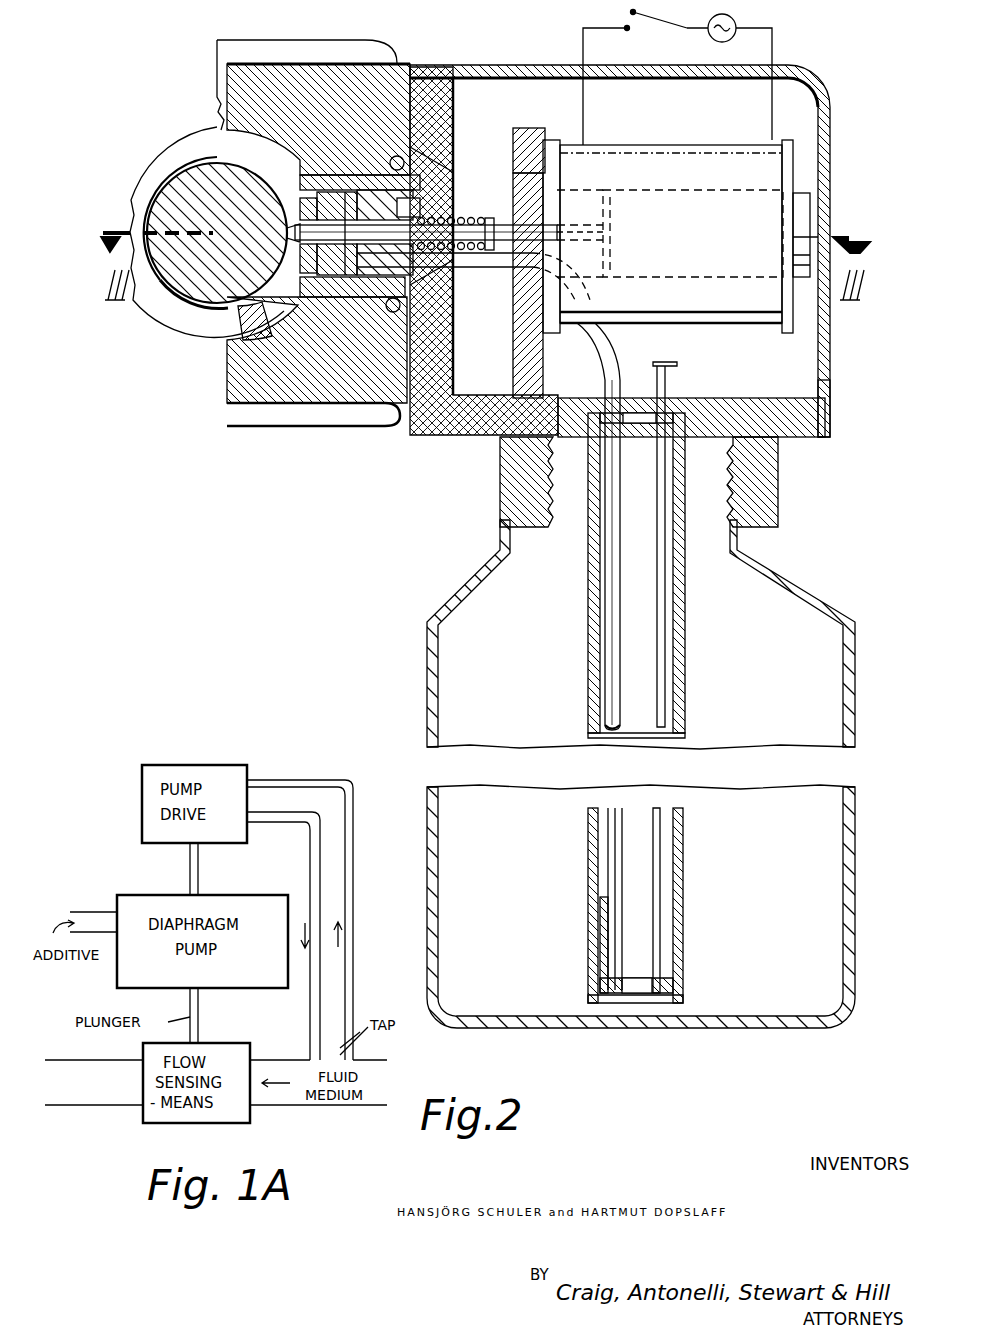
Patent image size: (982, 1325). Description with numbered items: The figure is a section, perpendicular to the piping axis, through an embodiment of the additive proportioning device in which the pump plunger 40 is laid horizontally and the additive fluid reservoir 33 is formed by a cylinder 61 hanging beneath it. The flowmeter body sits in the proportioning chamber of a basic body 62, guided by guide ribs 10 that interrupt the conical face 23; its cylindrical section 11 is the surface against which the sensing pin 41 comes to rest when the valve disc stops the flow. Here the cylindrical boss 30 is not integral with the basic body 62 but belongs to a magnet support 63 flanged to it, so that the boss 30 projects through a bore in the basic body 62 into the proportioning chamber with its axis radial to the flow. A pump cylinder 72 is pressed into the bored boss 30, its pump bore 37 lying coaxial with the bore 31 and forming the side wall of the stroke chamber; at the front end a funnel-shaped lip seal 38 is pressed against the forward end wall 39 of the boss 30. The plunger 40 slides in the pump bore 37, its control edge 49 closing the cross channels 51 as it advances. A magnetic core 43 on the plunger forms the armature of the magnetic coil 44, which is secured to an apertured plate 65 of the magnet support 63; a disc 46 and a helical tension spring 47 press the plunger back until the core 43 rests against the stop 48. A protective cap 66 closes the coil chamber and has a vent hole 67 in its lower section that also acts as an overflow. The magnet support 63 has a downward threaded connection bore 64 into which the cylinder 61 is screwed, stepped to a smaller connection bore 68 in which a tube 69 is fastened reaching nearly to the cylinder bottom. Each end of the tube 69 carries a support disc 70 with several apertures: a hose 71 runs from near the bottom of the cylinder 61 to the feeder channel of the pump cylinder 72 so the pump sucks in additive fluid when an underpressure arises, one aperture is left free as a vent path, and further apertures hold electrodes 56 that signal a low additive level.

The guide ribs 10 is at (303, 140).
The cylindrical section 11 is at (190, 283).
The conical face 23 is at (300, 370).
The cylindrical boss 30 is at (217, 340).
The bore 31 is at (213, 293).
The additive fluid reservoir 33 is at (460, 683).
The pump bore 37 is at (335, 300).
The lip seal 38 is at (300, 223).
The forward end wall 39 is at (300, 150).
The pump plunger 40 is at (385, 232).
The sensing pin 41 is at (297, 233).
The magnetic core 43 is at (695, 203).
The magnetic coil 44 is at (638, 173).
The disc 46 is at (458, 250).
The helical tension spring 47 is at (453, 255).
The stop 48 is at (813, 212).
The control edge 49 is at (365, 216).
The cross channels 51 is at (350, 265).
The electrodes 56 is at (660, 582).
The cylinder 61 is at (420, 800).
The basic body 62 is at (340, 383).
The magnet support 63 is at (430, 417).
The threaded connection bore 64 is at (730, 493).
The apertured plate 65 is at (530, 130).
The protective cap 66 is at (737, 72).
The vent hole 67 is at (825, 393).
The connection bore 68 is at (687, 407).
The tube 69 is at (683, 637).
The support disc 70 is at (667, 413).
The hose 71 is at (610, 823).
The pump cylinder 72 is at (413, 203).